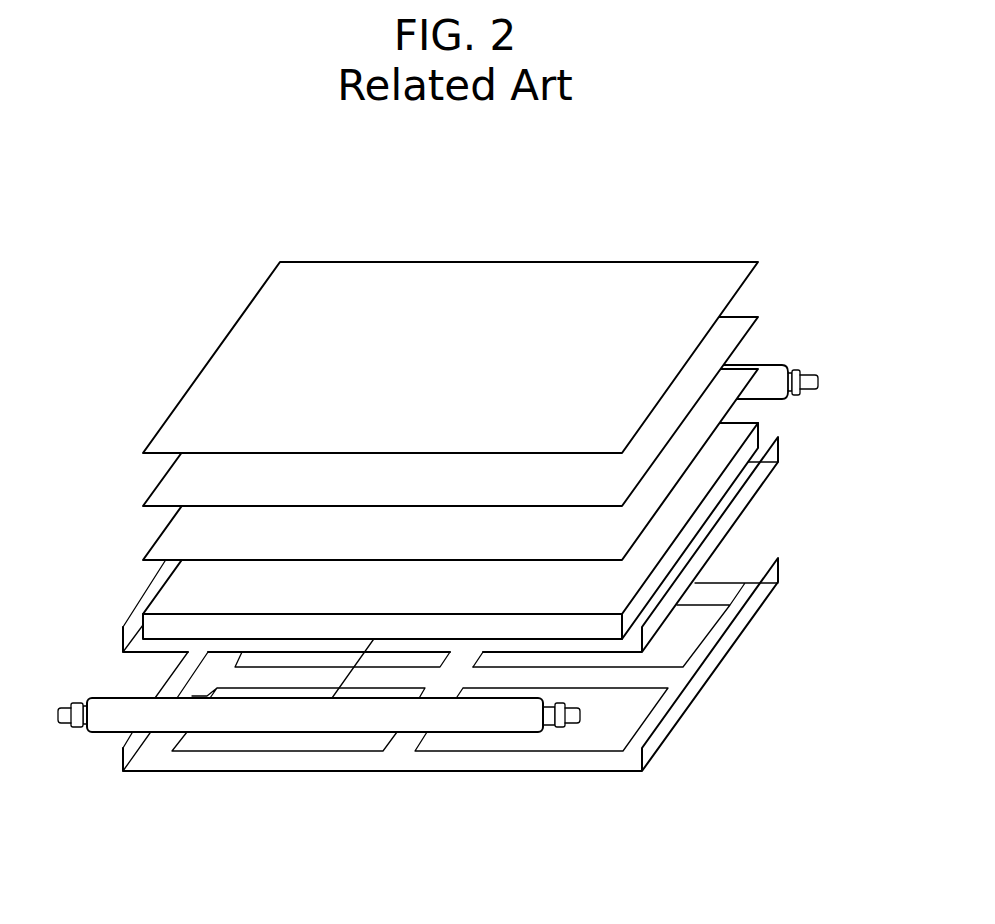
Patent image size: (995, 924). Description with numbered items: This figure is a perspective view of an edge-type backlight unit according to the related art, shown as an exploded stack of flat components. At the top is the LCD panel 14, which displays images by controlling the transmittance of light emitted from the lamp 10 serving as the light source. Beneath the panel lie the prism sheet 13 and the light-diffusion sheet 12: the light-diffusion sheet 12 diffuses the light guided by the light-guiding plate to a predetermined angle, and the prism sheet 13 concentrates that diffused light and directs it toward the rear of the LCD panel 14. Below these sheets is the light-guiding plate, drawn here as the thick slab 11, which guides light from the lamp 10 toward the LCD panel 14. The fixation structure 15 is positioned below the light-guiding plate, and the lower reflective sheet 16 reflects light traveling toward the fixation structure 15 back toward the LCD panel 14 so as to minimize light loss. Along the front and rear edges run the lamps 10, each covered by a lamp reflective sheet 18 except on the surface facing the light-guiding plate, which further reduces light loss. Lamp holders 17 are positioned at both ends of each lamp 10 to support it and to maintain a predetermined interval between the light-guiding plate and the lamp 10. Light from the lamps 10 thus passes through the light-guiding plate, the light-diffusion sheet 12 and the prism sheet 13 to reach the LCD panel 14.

The lamp 10 is at (580, 716).
The light guide plate 11 is at (168, 593).
The light-diffusion sheet 12 is at (168, 539).
The prism sheet 13 is at (168, 486).
The LCD panel 14 is at (168, 434).
The fixation structure 15 is at (122, 749).
The lower reflective sheet 16 is at (124, 630).
The lamp holder 17 is at (555, 728).
The lamp reflective sheet 18 is at (500, 727).